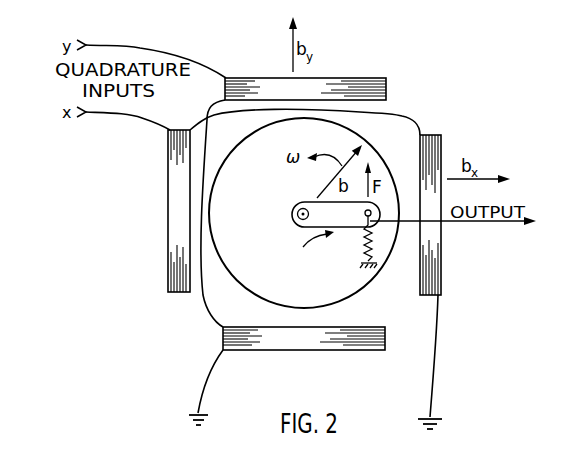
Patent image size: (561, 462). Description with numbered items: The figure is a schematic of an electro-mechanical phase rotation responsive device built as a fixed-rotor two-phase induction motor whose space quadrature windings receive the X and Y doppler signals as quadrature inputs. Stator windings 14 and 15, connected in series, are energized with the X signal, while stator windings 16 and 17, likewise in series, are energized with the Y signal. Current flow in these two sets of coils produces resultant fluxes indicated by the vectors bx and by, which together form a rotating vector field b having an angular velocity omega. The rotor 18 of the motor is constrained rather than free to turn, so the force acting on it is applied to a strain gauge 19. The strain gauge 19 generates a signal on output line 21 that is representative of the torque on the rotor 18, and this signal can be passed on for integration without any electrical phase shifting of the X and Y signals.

The stator winding 14 is at (168, 260).
The stator winding 15 is at (442, 150).
The stator winding 16 is at (363, 78).
The stator winding 17 is at (302, 350).
The rotor 18 is at (364, 296).
The strain gauge 19 is at (365, 245).
The line 21 is at (505, 225).